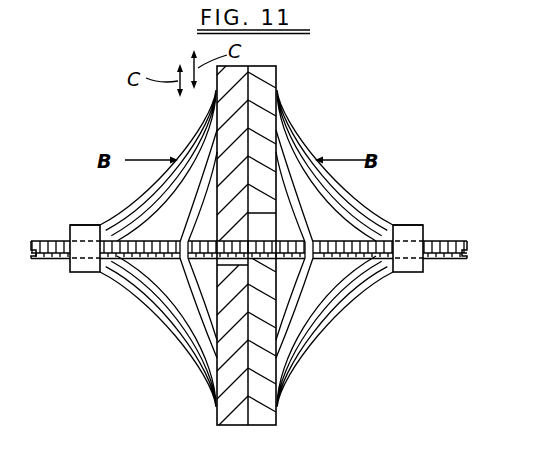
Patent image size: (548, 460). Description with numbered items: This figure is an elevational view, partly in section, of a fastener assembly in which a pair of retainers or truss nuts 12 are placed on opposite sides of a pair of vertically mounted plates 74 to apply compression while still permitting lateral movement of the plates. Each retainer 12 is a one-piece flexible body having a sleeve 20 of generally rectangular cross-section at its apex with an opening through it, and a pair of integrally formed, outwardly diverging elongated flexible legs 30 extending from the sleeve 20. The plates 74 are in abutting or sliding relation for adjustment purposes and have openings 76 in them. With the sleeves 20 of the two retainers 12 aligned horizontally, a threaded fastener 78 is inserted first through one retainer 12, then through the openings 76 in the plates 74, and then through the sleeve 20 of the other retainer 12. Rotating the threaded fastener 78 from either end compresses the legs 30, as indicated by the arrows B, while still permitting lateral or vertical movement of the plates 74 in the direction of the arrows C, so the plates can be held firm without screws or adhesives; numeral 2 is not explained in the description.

The apparatus centerline 2 is at (242, 88).
The retainer or truss nut 12 is at (419, 221).
The sleeve 20 is at (411, 272).
The flexible legs 30 is at (316, 338).
The plates 74 is at (267, 428).
The openings 76 is at (263, 270).
The threaded fastener 78 is at (62, 242).